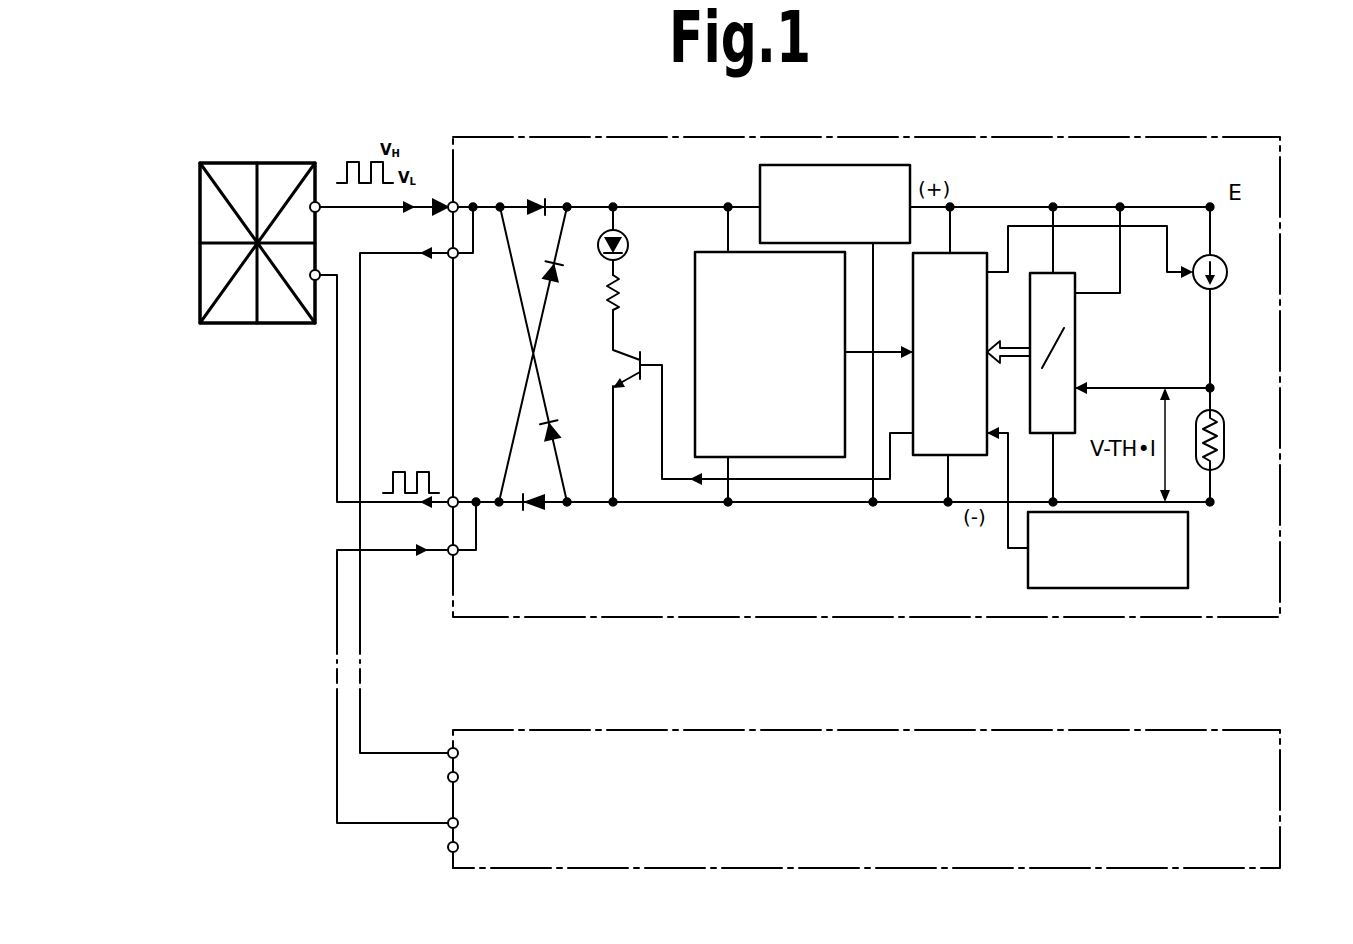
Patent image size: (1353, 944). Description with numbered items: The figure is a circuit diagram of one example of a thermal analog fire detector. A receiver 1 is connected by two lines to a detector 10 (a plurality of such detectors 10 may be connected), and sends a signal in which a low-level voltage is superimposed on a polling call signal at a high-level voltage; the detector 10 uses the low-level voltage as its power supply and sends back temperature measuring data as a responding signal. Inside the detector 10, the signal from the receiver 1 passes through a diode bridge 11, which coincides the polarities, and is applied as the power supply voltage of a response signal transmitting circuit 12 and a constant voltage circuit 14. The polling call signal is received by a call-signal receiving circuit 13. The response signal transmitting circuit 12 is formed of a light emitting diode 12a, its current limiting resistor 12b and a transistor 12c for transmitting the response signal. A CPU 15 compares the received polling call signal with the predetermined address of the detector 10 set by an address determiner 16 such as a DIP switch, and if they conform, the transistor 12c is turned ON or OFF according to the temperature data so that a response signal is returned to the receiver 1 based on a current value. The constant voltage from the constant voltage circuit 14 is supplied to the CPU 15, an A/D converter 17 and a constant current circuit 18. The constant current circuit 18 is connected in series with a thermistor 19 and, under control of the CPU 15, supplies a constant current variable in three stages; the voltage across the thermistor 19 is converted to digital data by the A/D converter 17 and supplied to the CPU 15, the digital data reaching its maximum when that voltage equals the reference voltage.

The receiver 1 is at (200, 190).
The detector 10 is at (655, 137).
The diode bridge 11 is at (520, 366).
The response signal transmitting circuit 12 is at (604, 360).
The light emitting diode 12a is at (630, 245).
The current limiting resistor 12b is at (622, 293).
The transistor 12c is at (633, 356).
The call-signal receiving circuit 13 is at (705, 250).
The constant voltage circuit 14 is at (761, 180).
The CPU 15 is at (913, 277).
The address determiner 16 is at (1192, 562).
The A/D converter 17 is at (1075, 280).
The constant current circuit 18 is at (1224, 283).
The thermistor 19 is at (1222, 462).